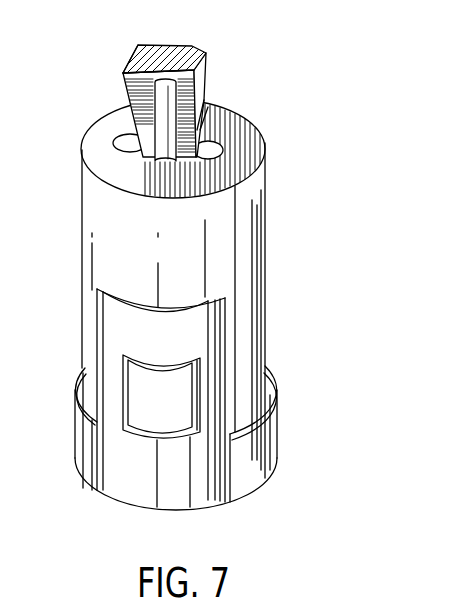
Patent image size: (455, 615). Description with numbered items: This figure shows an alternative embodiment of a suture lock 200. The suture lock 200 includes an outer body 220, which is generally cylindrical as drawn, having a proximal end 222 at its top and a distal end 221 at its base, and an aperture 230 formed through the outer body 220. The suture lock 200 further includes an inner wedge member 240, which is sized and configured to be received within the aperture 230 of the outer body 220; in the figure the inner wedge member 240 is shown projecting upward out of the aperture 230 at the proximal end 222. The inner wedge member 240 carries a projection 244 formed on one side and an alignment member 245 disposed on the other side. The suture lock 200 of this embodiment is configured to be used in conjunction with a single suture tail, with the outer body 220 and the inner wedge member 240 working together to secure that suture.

The suture lock 200 is at (60, 83).
The outer body 220 is at (243, 242).
The distal end 221 is at (103, 493).
The proximal end 222 is at (257, 140).
The aperture 230 is at (127, 143).
The inner wedge member 240 is at (177, 44).
The projection 244 is at (205, 108).
The alignment member 245 is at (132, 68).